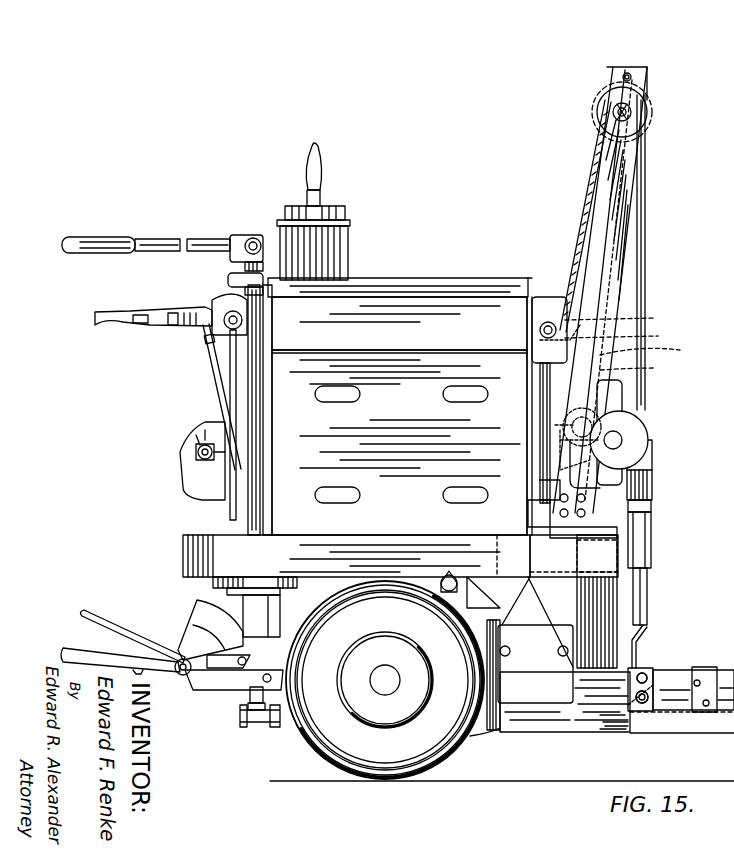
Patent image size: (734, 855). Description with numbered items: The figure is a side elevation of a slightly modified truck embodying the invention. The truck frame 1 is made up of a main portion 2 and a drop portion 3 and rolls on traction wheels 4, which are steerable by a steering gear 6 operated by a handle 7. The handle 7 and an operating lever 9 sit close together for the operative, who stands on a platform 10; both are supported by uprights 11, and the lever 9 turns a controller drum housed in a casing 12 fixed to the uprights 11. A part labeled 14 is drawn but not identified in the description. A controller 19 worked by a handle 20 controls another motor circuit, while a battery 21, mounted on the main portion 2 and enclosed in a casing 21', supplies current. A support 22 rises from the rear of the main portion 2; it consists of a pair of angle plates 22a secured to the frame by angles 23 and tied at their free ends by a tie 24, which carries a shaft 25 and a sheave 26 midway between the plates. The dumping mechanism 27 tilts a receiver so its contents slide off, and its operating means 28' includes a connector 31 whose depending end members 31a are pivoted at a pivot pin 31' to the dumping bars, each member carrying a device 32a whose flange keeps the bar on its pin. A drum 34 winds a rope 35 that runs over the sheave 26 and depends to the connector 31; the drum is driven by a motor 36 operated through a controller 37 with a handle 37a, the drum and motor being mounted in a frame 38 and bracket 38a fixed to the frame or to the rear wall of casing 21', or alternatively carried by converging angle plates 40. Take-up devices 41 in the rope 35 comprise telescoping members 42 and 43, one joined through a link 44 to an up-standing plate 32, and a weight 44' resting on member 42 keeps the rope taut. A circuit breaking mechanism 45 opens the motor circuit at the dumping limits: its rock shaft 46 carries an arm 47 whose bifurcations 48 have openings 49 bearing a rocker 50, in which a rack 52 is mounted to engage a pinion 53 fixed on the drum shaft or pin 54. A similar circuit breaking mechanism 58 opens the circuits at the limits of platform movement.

The truck frame 1 is at (402, 416).
The main portion 2 is at (390, 550).
The drop portion 3 is at (607, 732).
The traction wheels 4 is at (315, 738).
The steering gear 6 is at (255, 724).
The handle 7 is at (145, 240).
The operating lever 9 is at (150, 328).
The platform 10 is at (75, 649).
The uprights 11 is at (240, 387).
The casing 12 is at (185, 479).
The lever arm 14 is at (108, 620).
The controller 19 is at (215, 583).
The handle 20 is at (226, 281).
The battery 21 is at (401, 444).
The casing 21' is at (399, 339).
The support 22 is at (600, 345).
The angle plates 22a is at (622, 255).
The angles 23 is at (586, 509).
The tie 24 is at (633, 72).
The shaft 25 is at (612, 113).
The sheave 26 is at (652, 113).
The dumping mechanism 27 is at (639, 366).
The operating means 28' is at (634, 434).
The connector 31 is at (661, 667).
The pivot pin 31' is at (646, 730).
The depending end members 31a is at (648, 700).
The up-standing plate 32 is at (637, 655).
The device 32a is at (702, 676).
The drum 34 is at (560, 443).
The rope 35 is at (580, 197).
The motor 36 is at (652, 452).
The controller 37 is at (340, 250).
The handle 37a is at (315, 160).
The frame 38 is at (625, 391).
The bracket 38a is at (540, 496).
The converging angle plates 40 is at (440, 283).
The take-up devices 41 is at (655, 511).
The outer telescoping member 42 is at (651, 541).
The inner telescoping member 43 is at (647, 586).
The link 44 is at (588, 601).
The weight 44' is at (661, 484).
The circuit breaking mechanism 45 is at (540, 292).
The rock shaft 46 is at (540, 331).
The arm 47 is at (535, 343).
The bifurcations 48 is at (622, 318).
The openings 49 is at (624, 336).
The rocker 50 is at (540, 367).
The rack 52 is at (653, 352).
The pinion 53 is at (562, 450).
The pin 54 is at (565, 426).
The circuit breaking mechanism 58 is at (548, 695).